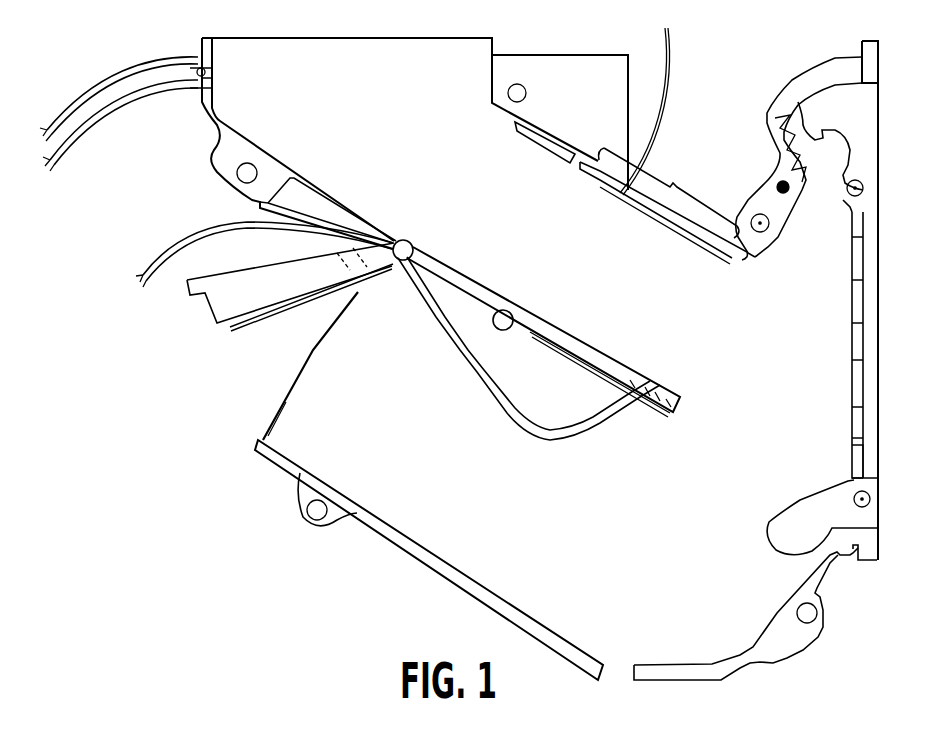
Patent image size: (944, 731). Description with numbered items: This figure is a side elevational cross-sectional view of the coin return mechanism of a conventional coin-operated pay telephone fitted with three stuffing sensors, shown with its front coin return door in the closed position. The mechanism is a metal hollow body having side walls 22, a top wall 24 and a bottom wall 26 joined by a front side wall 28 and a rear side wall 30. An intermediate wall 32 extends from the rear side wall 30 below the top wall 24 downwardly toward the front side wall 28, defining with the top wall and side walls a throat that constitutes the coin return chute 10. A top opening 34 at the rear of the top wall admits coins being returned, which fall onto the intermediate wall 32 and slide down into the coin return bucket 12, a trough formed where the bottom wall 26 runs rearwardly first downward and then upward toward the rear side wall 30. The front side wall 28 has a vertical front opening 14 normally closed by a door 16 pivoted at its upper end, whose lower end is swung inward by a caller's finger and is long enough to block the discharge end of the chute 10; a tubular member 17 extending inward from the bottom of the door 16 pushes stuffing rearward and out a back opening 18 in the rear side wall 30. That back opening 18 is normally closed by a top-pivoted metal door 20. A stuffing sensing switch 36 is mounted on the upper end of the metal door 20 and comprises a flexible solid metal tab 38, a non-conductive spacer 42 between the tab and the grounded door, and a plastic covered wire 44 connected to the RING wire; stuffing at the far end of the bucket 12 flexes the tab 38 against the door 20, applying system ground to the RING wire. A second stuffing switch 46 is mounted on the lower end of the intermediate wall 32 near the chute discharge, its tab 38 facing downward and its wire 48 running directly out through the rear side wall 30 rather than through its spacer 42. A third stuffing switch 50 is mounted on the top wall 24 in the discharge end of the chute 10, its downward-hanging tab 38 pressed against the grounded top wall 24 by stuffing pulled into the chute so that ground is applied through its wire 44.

The coin return chute 10 is at (528, 258).
The coin return bucket 12 is at (597, 598).
The front opening 14 is at (877, 373).
The door 16 is at (855, 453).
The tubular member 17 is at (784, 537).
The back opening 18 is at (275, 420).
The metal door 20 is at (198, 303).
The side walls 22 is at (770, 338).
The top wall 24 is at (520, 100).
The bottom wall 26 is at (407, 543).
The front side wall 28 is at (868, 55).
The rear side wall 30 is at (212, 114).
The intermediate wall 32 is at (437, 257).
The top opening 34 is at (400, 38).
The stuffing sensing switch 36 is at (262, 326).
The flexible solid metal tab 38 is at (681, 248).
The non-conductive spacer 42 is at (650, 390).
The plastic covered wire 44 is at (152, 262).
The second stuffing switch 46 is at (610, 385).
The wire 48 is at (478, 378).
The third stuffing switch 50 is at (598, 190).